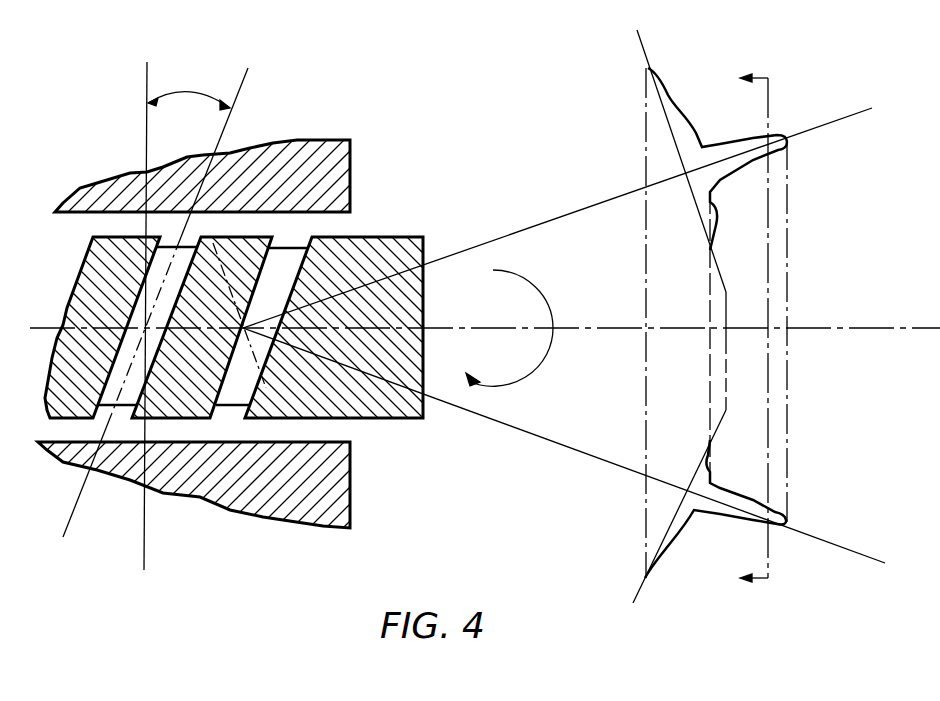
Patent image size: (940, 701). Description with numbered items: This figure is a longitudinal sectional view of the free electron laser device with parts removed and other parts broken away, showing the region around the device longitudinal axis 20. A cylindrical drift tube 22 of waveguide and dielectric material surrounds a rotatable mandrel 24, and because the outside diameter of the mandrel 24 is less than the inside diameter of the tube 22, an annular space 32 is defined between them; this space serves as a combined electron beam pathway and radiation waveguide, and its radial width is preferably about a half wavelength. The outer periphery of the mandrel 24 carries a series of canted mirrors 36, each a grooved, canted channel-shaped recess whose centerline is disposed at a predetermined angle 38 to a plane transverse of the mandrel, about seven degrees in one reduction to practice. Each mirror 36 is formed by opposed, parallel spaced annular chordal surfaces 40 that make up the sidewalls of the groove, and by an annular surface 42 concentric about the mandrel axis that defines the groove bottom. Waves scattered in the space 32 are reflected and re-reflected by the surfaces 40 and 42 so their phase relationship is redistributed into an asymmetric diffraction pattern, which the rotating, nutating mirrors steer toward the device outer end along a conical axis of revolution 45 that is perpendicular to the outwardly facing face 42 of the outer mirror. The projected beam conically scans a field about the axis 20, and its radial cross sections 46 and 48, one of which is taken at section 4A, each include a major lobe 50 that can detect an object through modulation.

The device longitudinal axis 20 is at (755, 331).
The cylindrical drift tube 22 is at (352, 172).
The rotatable mandrel 24 is at (301, 325).
The annular space 32 is at (330, 428).
The canted mirror 36 is at (294, 248).
The angle 38 is at (185, 93).
The annular chordal surface 40 is at (106, 392).
The annular surface 42 is at (236, 406).
The light beam axis 45 is at (485, 243).
The radial cross section 46 is at (694, 133).
The radial cross section 48 is at (660, 553).
The major lobe 50 is at (788, 145).
The section 4A- 4A is at (734, 329).